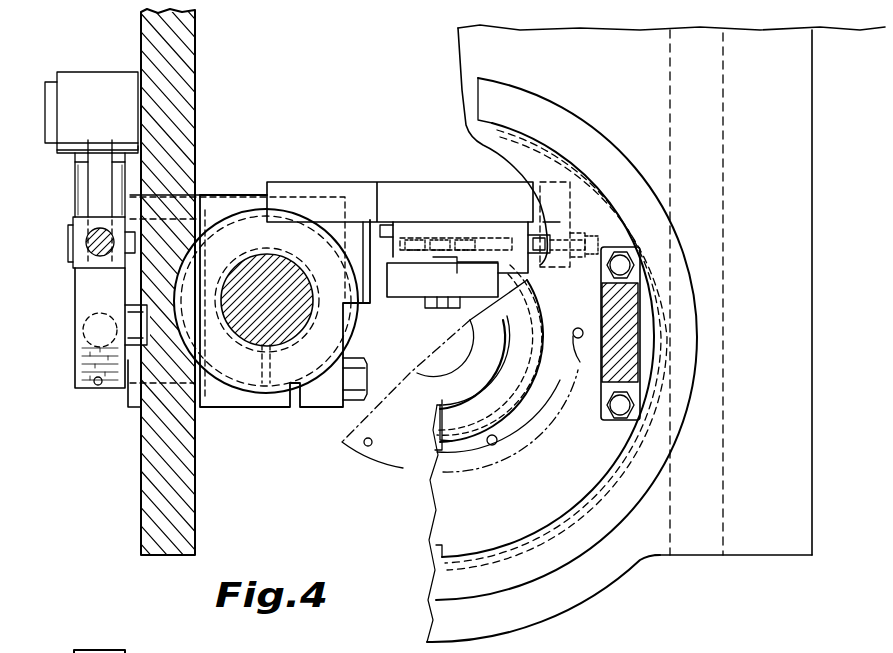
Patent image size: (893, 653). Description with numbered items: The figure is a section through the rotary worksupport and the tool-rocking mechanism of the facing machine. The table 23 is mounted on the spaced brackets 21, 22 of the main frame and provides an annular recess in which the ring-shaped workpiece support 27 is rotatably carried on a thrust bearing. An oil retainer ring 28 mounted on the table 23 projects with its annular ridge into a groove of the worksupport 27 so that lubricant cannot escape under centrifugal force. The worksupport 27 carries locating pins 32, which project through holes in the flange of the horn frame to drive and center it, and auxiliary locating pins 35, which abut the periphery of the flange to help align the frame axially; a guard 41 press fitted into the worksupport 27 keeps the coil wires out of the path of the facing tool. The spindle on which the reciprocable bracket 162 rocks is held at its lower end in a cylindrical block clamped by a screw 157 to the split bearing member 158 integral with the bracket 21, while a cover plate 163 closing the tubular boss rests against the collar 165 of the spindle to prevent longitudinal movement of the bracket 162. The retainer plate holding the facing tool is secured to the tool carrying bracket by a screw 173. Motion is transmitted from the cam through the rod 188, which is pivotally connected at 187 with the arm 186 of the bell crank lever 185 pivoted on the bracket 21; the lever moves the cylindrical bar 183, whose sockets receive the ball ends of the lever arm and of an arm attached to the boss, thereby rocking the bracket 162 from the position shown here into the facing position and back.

The bracket 21 is at (185, 76).
The bracket 22 is at (671, 339).
The table 23 is at (572, 600).
The workpiece support 27 is at (530, 165).
The oil retainer ring 28 is at (575, 122).
The locating pins 32 is at (497, 441).
The auxiliary locating pins 35 is at (580, 340).
The guard 41 is at (505, 393).
The screw 157 is at (355, 380).
The split bearing member 158 is at (300, 402).
The reciprocable bracket 162 is at (403, 190).
The cover plate 163 is at (252, 232).
The collar 165 is at (295, 308).
The screw 173 is at (430, 305).
The cylindrical bar 183 is at (85, 286).
The bell crank lever 185 is at (80, 83).
The arm 186 is at (98, 186).
The pivotal connection 187 is at (72, 233).
The rod 188 is at (97, 240).